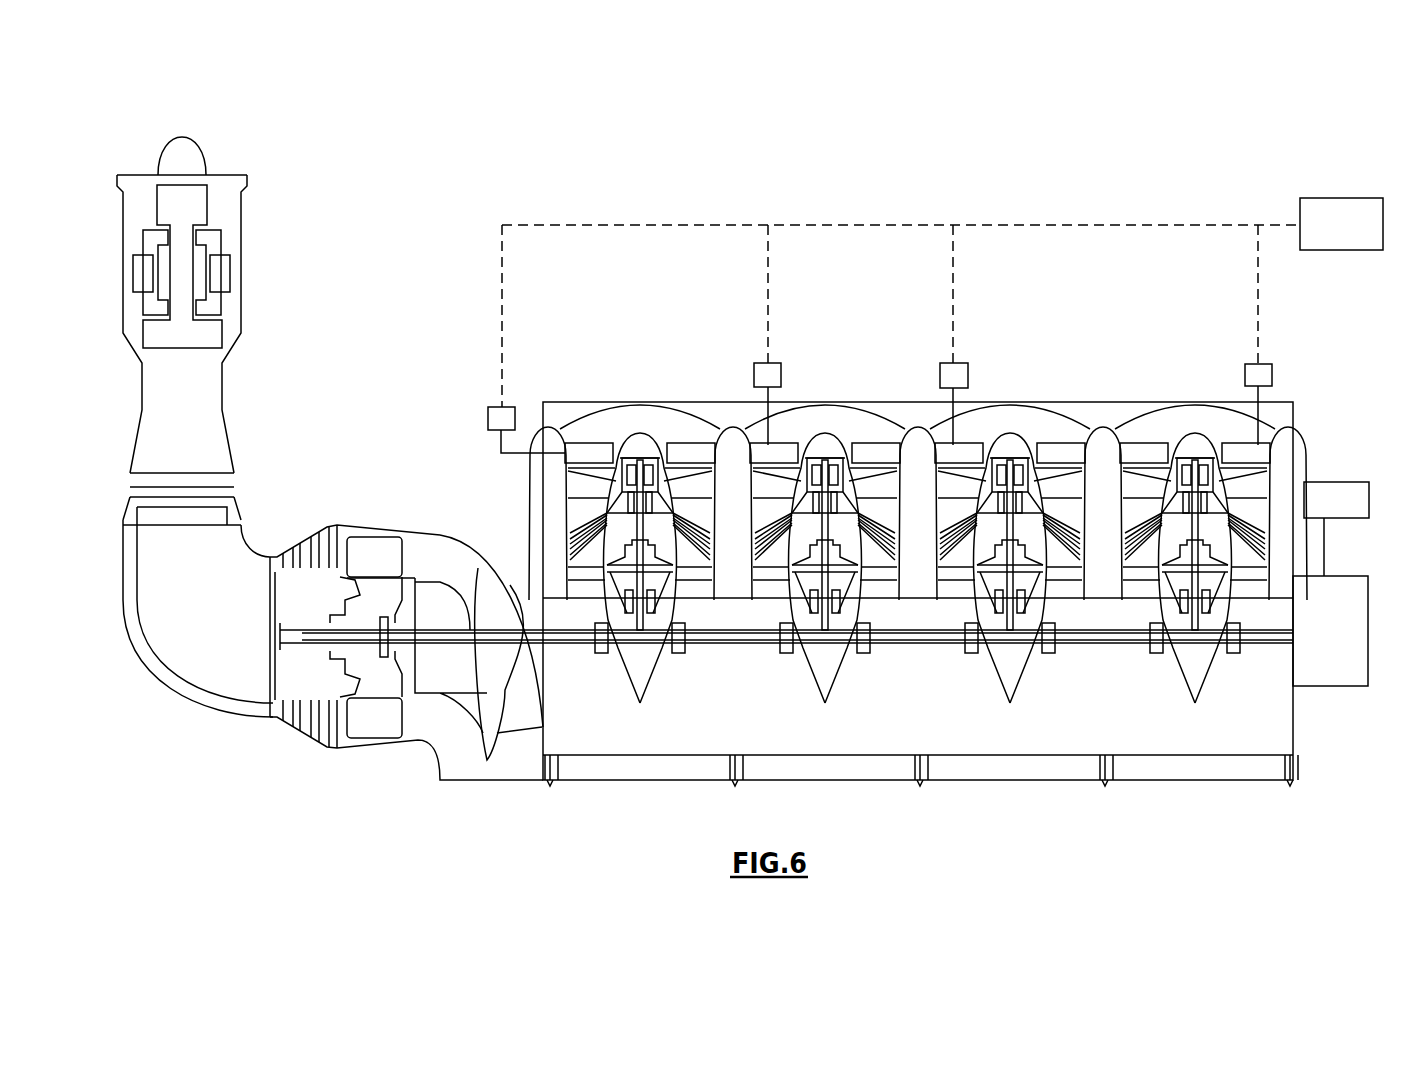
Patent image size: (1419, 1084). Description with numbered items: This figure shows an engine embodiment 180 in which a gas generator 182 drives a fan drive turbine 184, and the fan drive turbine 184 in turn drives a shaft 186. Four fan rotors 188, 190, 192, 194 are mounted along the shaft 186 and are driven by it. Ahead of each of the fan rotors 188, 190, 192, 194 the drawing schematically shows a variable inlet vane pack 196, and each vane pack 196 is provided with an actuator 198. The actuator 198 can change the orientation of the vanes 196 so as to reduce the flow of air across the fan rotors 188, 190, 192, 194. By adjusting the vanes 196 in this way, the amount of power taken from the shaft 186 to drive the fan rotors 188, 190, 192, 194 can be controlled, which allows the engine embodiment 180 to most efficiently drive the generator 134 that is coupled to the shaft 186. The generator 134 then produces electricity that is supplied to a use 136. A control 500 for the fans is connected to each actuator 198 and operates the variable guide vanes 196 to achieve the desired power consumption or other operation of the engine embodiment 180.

The generator 134 is at (1350, 595).
The use 136 is at (1343, 497).
The engine embodiment 180 is at (804, 338).
The gas generator 182 is at (276, 256).
The fan drive turbine 184 is at (300, 548).
The shaft 186 is at (493, 637).
The fan rotor 188 is at (680, 452).
The fan rotor 190 is at (882, 478).
The fan rotor 192 is at (965, 477).
The fan rotor 194 is at (1130, 477).
The variable inlet vane pack 196 is at (585, 458).
The actuator 198 is at (488, 418).
The control 500 is at (1364, 238).